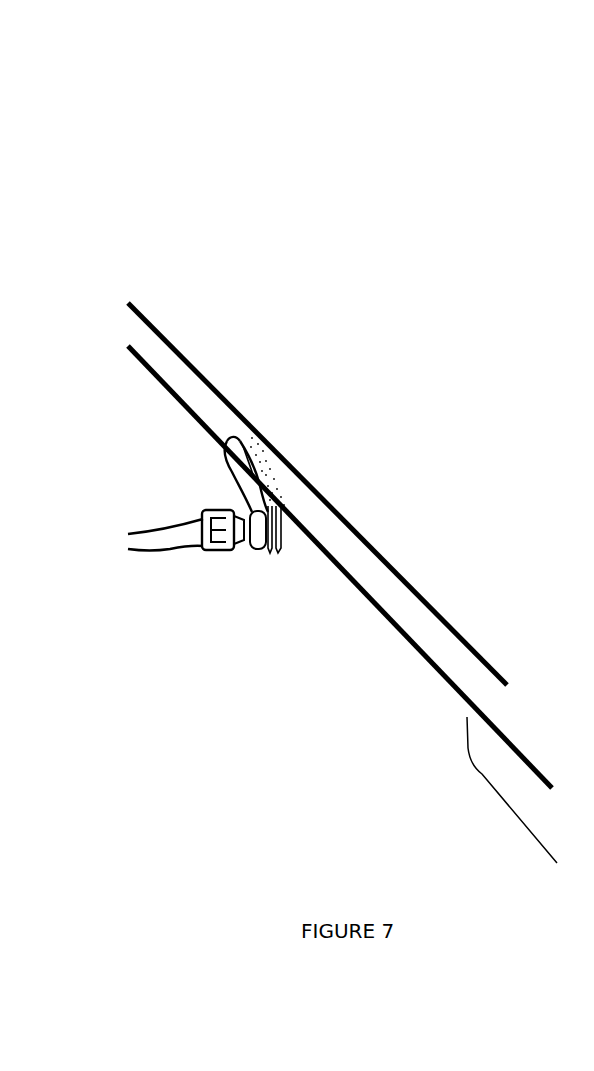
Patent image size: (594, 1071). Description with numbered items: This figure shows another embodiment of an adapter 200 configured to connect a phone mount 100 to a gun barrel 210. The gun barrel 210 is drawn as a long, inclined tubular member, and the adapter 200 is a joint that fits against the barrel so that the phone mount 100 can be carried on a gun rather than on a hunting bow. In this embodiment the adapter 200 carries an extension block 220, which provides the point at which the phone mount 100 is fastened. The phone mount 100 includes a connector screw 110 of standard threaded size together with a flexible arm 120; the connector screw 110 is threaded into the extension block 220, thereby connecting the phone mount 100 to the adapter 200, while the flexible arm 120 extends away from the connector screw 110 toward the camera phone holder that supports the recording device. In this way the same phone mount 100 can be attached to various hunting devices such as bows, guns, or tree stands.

The phone mount 100 is at (181, 533).
The connector screw 110 is at (203, 479).
The flexible arm 120 is at (160, 537).
The adapter 200 is at (244, 455).
The gun barrel 210 is at (323, 538).
The extension block 220 is at (270, 553).